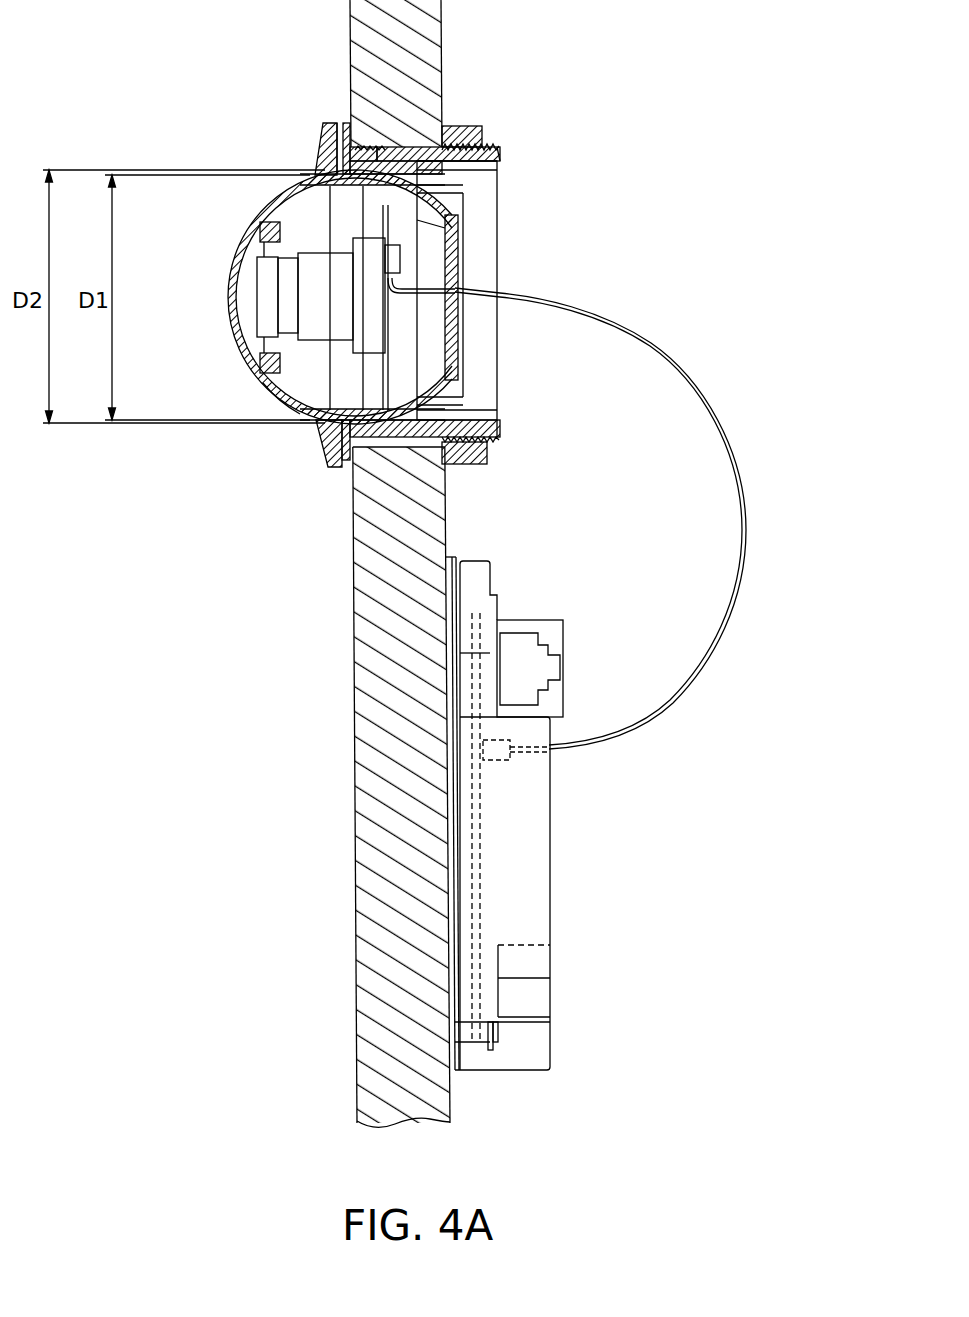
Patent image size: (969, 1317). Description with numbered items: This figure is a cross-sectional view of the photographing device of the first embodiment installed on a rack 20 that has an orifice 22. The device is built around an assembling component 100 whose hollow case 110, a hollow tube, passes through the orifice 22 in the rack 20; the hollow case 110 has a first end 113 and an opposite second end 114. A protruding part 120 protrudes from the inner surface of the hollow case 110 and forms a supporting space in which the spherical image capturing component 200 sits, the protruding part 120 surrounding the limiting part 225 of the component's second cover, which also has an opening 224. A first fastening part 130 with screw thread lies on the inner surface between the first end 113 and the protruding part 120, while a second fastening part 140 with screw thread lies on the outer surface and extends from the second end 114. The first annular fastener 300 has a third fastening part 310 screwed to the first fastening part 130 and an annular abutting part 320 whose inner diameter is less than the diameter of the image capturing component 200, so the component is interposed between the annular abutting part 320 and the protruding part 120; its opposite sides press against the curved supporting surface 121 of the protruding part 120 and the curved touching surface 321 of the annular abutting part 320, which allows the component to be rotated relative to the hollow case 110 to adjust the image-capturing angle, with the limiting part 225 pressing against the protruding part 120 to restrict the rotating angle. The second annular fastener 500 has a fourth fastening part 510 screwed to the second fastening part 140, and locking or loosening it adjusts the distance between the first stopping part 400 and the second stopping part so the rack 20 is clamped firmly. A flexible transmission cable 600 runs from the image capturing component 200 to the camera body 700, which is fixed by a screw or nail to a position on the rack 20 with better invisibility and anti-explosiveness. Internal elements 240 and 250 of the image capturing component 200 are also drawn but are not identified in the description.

The rack 20 is at (395, 818).
The orifice 22 is at (410, 148).
The assembling component 100 is at (508, 435).
The hollow case 110 is at (457, 147).
The first end 113 is at (330, 140).
The second end 114 is at (500, 155).
The protruding part 120 is at (365, 150).
The supporting surface 121 is at (445, 228).
The first fastening part 130 is at (350, 165).
The second fastening part 140 is at (477, 160).
The image capturing component 200 is at (226, 249).
The opening 224 is at (458, 290).
The limiting part 225 is at (458, 378).
The lens module 240 is at (267, 307).
The circuit board 250 is at (388, 333).
The first annular fastener 300 is at (318, 460).
The third fastening part 310 is at (317, 183).
The annular abutting part 320 is at (322, 438).
The touching surface 321 is at (262, 388).
The first stopping part 400 is at (368, 455).
The second annular fastener 500 is at (470, 475).
The fourth fastening part 510 is at (472, 126).
The flexible transmission cable 600 is at (694, 368).
The camera body 700 is at (575, 874).